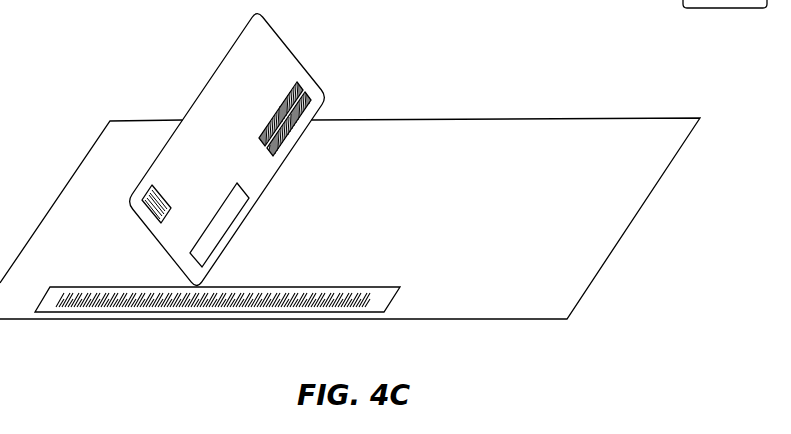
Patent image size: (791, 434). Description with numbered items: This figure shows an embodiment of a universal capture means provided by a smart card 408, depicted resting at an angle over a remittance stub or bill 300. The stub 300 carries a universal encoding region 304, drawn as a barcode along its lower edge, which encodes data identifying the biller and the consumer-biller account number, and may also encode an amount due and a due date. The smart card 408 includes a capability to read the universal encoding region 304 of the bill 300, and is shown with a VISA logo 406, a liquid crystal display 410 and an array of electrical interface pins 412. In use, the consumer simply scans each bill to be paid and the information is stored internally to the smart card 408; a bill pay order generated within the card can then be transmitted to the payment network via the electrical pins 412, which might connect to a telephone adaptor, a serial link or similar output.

The remittance stub 300 is at (497, 120).
The universal encoding region 304 is at (331, 311).
The VISA logo 406 is at (303, 83).
The smart card 408 is at (208, 78).
The liquid crystal display 410 is at (243, 187).
The electrical interface pins 412 is at (152, 186).